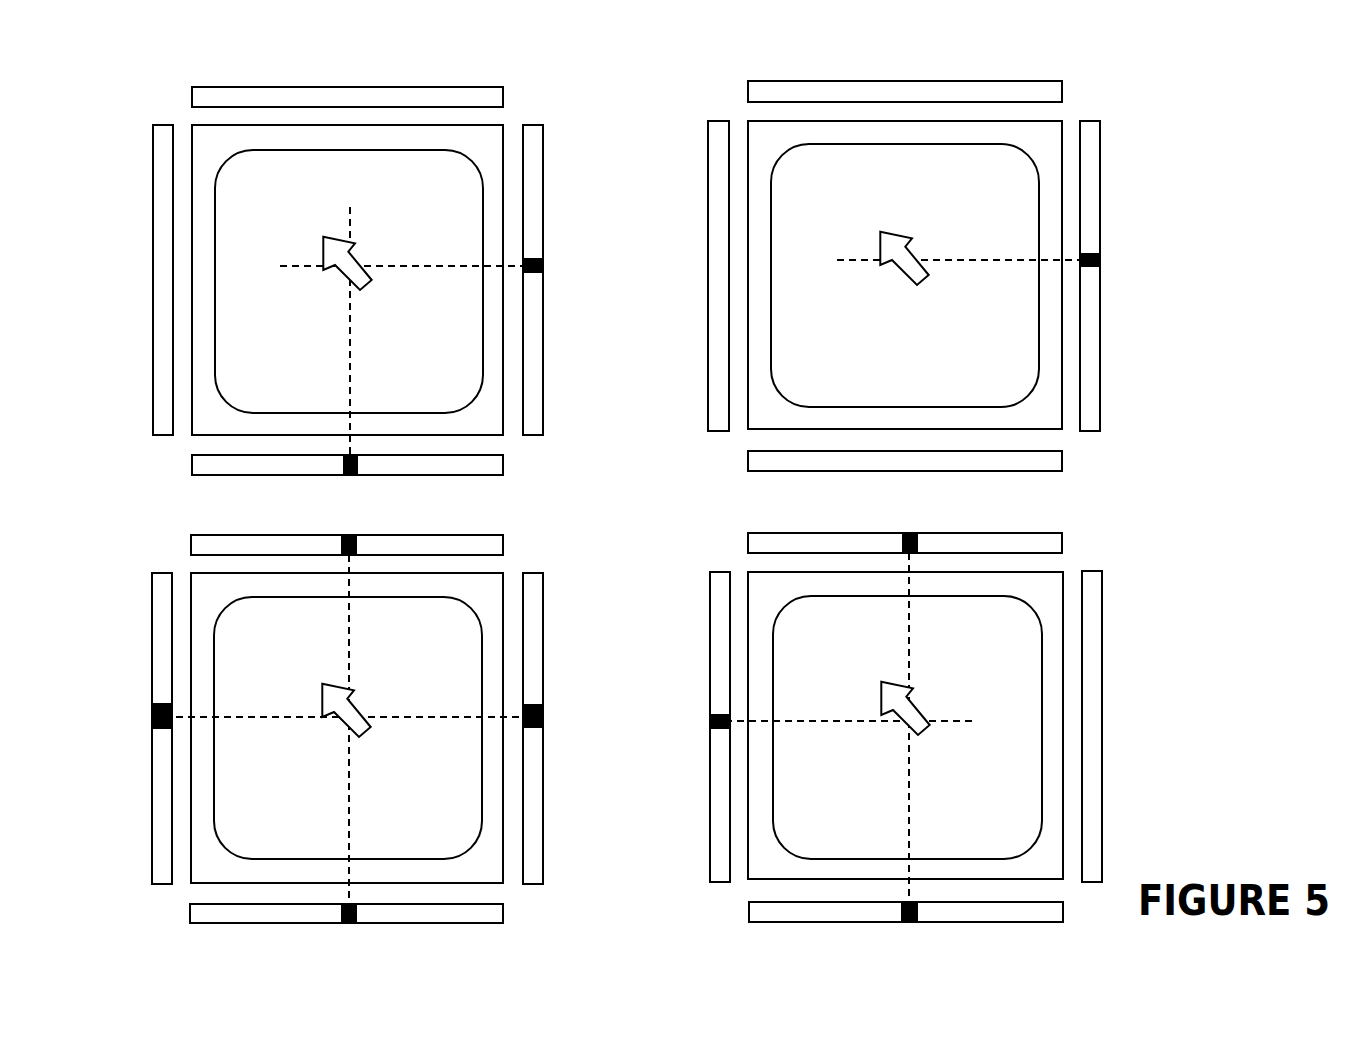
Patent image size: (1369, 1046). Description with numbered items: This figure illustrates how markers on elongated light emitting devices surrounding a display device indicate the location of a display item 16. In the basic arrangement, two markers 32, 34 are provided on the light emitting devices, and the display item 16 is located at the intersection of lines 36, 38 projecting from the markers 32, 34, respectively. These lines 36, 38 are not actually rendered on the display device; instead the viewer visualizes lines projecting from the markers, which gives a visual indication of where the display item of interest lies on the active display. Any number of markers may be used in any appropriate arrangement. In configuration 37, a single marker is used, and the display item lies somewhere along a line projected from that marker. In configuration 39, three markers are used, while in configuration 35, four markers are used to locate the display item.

The display item 16 is at (330, 245).
The marker 32 is at (539, 261).
The marker 34 is at (340, 475).
The line 36 is at (427, 265).
The line 38 is at (345, 335).
The configuration 35 is at (547, 554).
The configuration 37 is at (1077, 92).
The configuration 39 is at (1092, 540).